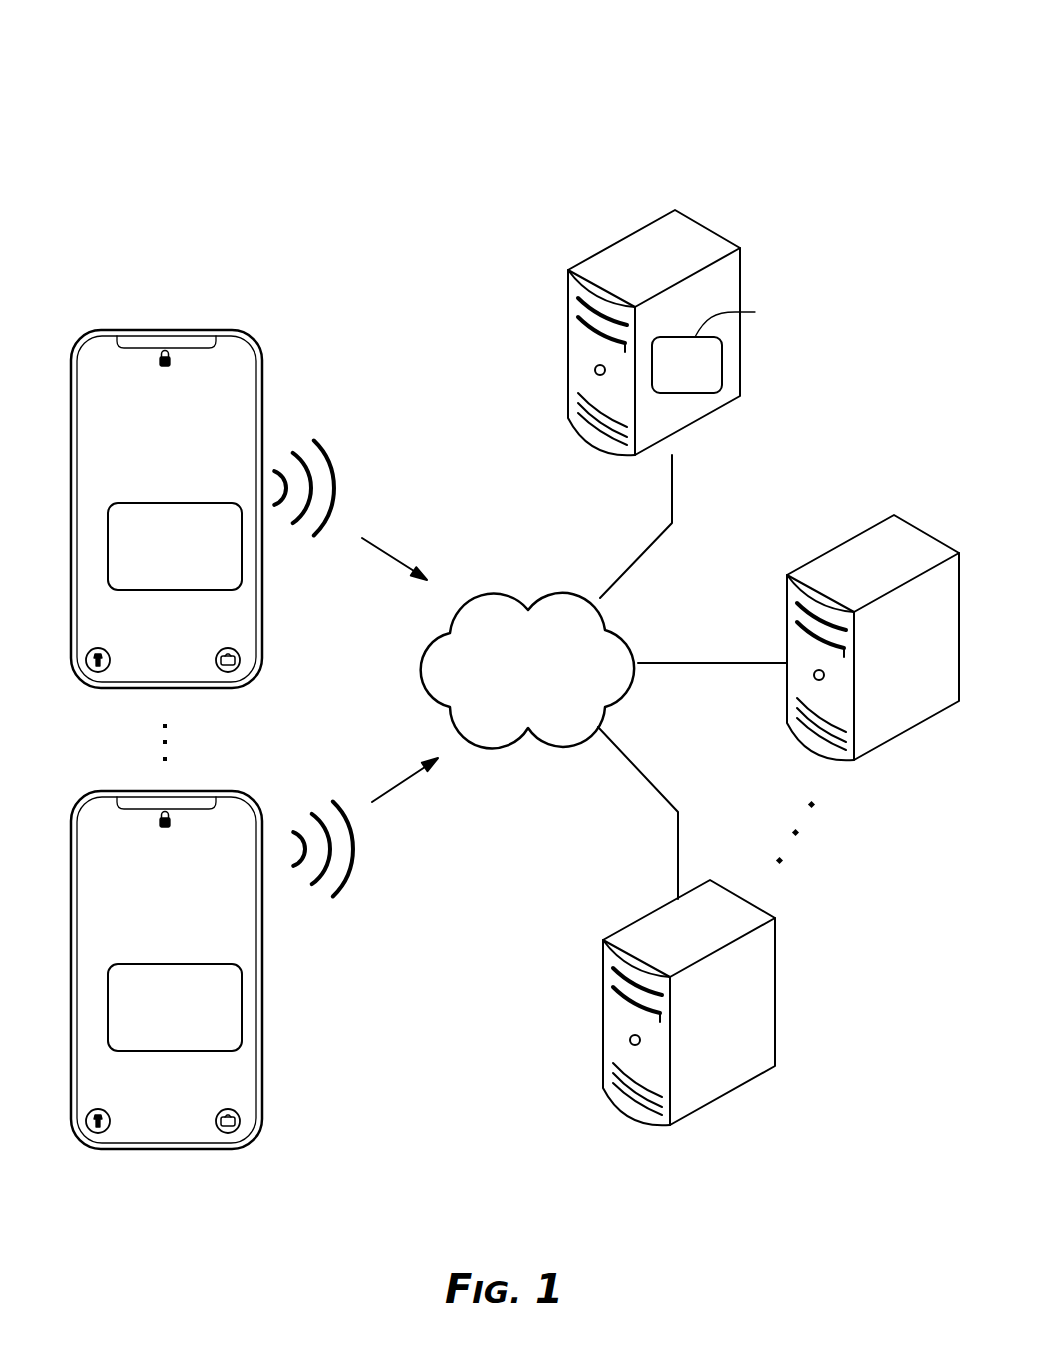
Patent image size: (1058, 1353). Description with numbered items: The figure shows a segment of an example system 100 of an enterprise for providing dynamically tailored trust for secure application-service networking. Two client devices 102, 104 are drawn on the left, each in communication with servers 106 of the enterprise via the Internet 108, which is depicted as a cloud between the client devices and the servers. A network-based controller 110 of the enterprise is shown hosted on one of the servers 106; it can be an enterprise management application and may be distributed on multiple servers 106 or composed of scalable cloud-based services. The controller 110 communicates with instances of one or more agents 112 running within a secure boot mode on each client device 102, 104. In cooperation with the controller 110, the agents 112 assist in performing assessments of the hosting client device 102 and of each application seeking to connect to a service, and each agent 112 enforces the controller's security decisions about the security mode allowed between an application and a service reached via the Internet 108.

The system 100 is at (500, 86).
The client device 102 is at (122, 331).
The client device 104 is at (122, 792).
The servers 106 is at (596, 257).
The Internet 108 is at (508, 671).
The network-based controller 110 is at (670, 379).
The agents 112 is at (175, 777).